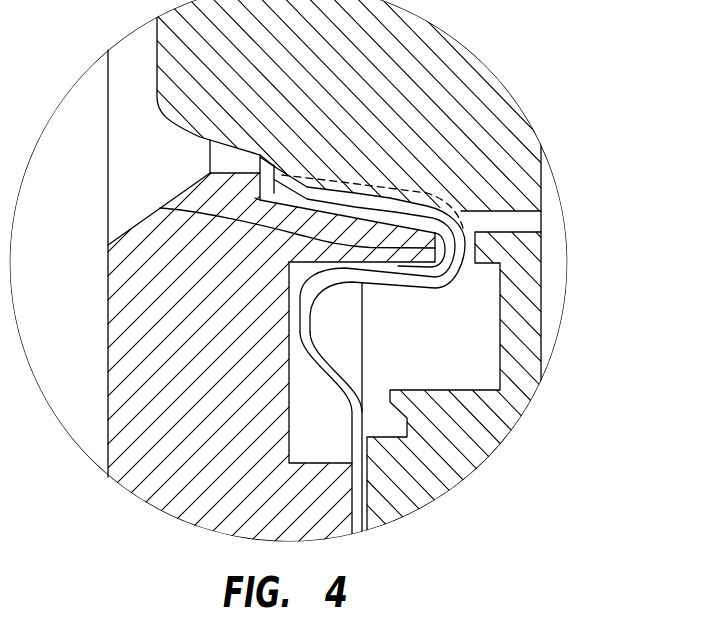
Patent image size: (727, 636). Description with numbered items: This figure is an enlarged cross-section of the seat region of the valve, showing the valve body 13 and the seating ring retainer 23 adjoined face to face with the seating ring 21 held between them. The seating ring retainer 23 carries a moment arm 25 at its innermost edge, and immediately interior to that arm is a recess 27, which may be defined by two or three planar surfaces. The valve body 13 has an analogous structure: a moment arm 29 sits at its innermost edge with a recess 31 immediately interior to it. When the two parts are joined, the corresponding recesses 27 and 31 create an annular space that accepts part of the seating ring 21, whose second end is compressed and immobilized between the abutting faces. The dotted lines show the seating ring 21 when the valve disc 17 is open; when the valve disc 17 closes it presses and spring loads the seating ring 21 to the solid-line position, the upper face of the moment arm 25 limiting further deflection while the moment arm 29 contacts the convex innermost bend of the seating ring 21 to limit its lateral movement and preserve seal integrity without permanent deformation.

The valve body 13 is at (475, 438).
The valve disc 17 is at (477, 88).
The seating ring 21 is at (318, 328).
The seating ring retainer 23 is at (332, 477).
The moment arm 25 is at (160, 208).
The recess 27 is at (312, 421).
The moment arm 29 is at (495, 252).
The recess 31 is at (473, 324).